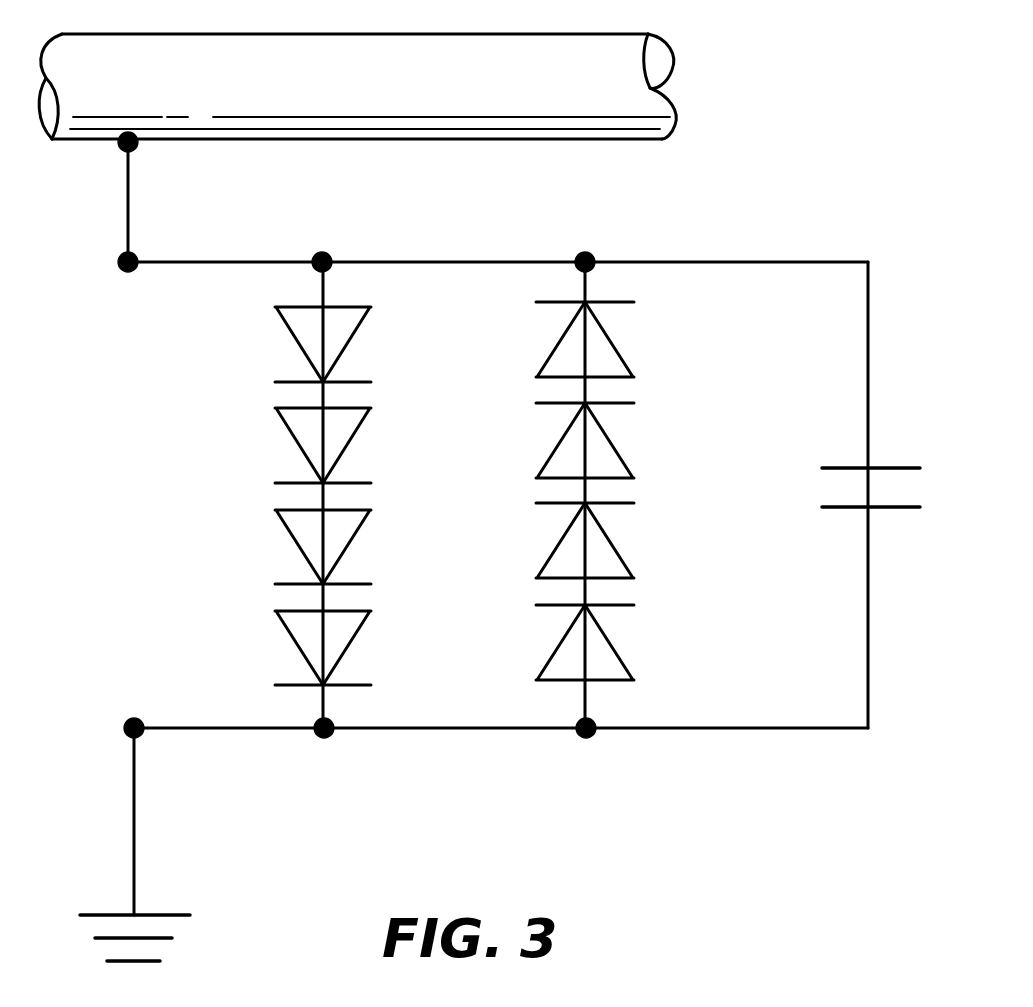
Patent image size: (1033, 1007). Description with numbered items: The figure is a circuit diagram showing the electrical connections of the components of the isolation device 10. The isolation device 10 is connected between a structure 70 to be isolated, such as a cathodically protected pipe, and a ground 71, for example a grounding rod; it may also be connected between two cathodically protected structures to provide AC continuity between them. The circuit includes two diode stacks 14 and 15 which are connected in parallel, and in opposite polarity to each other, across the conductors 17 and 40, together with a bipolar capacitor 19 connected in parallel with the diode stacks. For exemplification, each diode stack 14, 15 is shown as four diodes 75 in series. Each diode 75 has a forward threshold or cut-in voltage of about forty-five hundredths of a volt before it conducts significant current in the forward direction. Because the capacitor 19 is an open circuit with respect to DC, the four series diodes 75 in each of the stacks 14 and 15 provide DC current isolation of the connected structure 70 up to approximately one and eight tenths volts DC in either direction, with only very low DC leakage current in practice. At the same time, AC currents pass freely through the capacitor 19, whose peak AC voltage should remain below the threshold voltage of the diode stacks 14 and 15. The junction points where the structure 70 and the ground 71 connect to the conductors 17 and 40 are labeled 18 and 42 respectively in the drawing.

The isolation device 10 is at (646, 234).
The diode stack 14 is at (418, 492).
The diode stack 15 is at (483, 486).
The conductor 17 is at (431, 261).
The first junction node 18 is at (135, 273).
The bipolar capacitor 19 is at (849, 465).
The conductor 40 is at (440, 730).
The second junction node 42 is at (130, 716).
The structure 70 is at (182, 141).
The ground 71 is at (165, 912).
The diode 75 is at (284, 326).